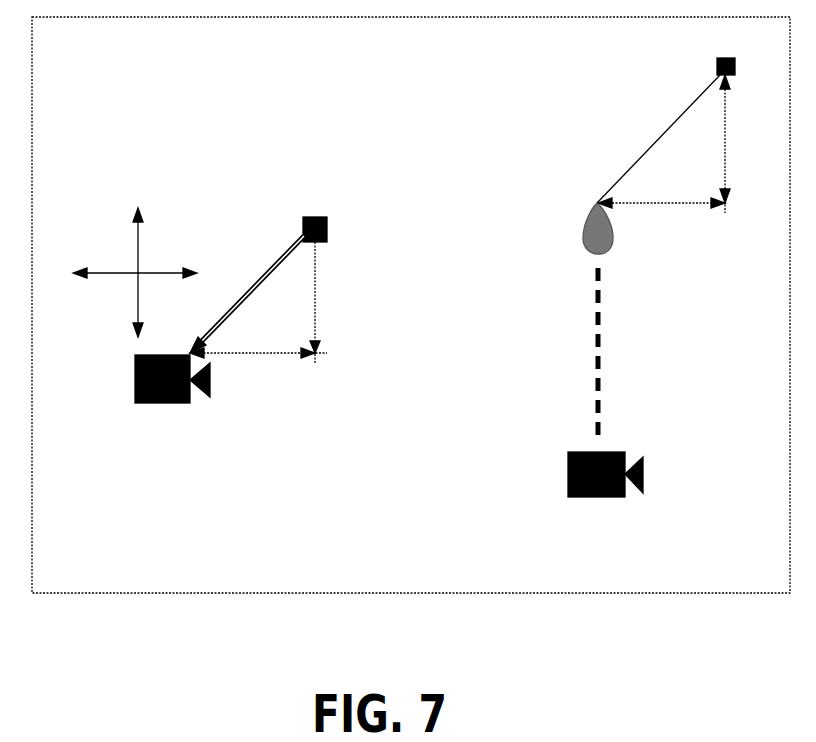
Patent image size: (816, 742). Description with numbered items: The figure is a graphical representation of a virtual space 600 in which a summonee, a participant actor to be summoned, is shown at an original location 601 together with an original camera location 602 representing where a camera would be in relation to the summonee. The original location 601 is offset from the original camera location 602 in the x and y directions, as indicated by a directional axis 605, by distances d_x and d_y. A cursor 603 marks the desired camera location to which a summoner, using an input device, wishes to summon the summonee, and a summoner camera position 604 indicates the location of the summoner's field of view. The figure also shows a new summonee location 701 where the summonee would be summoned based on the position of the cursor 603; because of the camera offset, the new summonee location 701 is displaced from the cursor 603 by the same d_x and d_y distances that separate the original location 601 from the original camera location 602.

The virtual space 600 is at (382, 61).
The original location 601 is at (306, 217).
The original camera location 602 is at (157, 405).
The cursor 603 is at (590, 210).
The summoner camera position 604 is at (585, 498).
The directional axis 605 is at (108, 270).
The new summonee location 701 is at (717, 58).